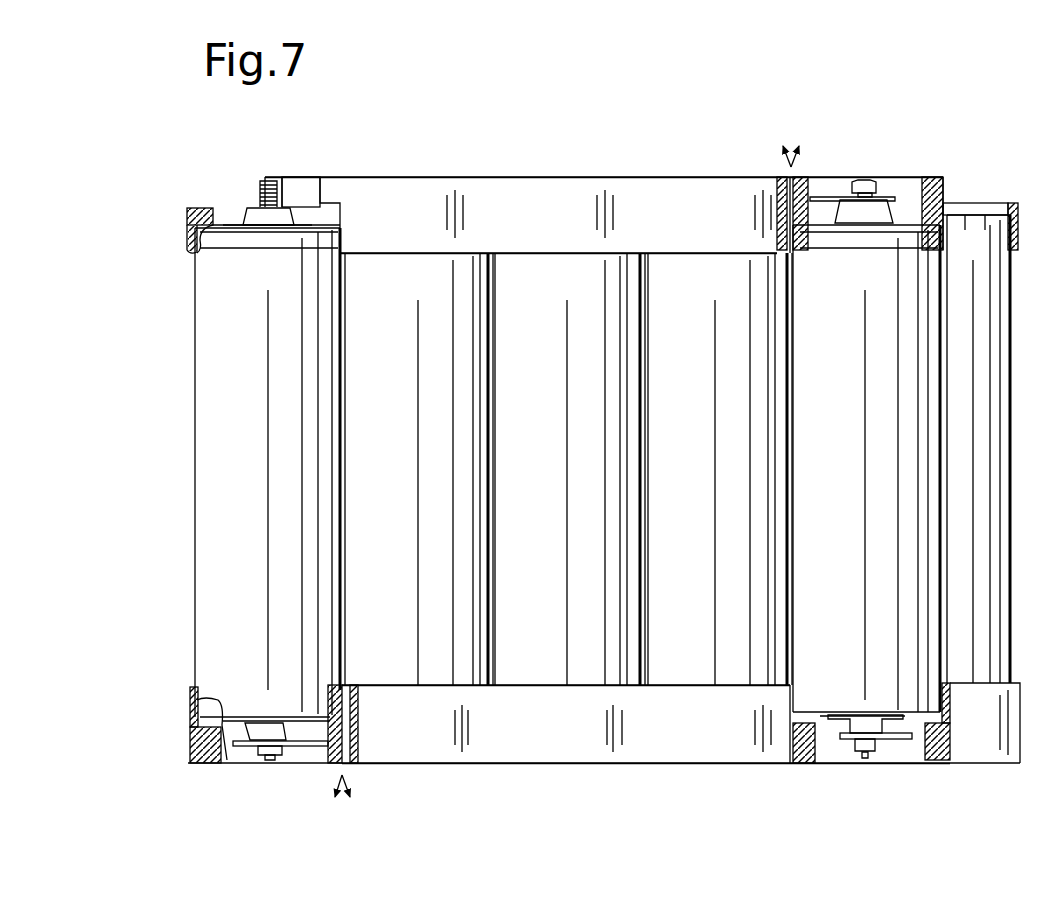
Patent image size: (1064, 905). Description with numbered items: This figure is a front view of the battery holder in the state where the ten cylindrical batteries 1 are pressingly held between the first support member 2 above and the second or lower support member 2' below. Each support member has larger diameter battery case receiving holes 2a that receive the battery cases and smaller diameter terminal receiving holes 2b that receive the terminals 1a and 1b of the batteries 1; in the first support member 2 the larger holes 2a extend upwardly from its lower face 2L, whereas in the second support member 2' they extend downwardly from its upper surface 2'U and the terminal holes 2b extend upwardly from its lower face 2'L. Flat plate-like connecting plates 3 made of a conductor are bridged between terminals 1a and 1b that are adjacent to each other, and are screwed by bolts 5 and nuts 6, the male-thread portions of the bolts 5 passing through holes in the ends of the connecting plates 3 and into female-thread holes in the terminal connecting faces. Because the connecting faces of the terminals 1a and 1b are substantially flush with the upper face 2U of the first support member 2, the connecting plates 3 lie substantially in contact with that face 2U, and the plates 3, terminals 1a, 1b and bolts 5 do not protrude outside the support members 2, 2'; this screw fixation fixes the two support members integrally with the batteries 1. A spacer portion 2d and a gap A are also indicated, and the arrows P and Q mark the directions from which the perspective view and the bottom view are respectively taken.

The cylindrical battery 1 is at (212, 418).
The terminal 1a is at (265, 218).
The terminal 1b is at (270, 730).
The first support member 2 is at (604, 182).
The upper face of the first support member 2U is at (428, 176).
The lower face of the first support member 2L is at (522, 256).
The second support member 2' is at (604, 769).
The upper surface of the second support member 2'U is at (566, 606).
The lower face of the second support member 2'L is at (646, 824).
The battery case receiving hole 2a is at (218, 232).
The terminal receiving hole 2b is at (307, 200).
The spacer wall 2d is at (762, 178).
The connecting plate 3 is at (296, 747).
The bolt 5 is at (263, 185).
The nut 6 is at (866, 178).
The arrow P is at (633, 153).
The arrow Q is at (463, 777).
The gap A is at (567, 471).